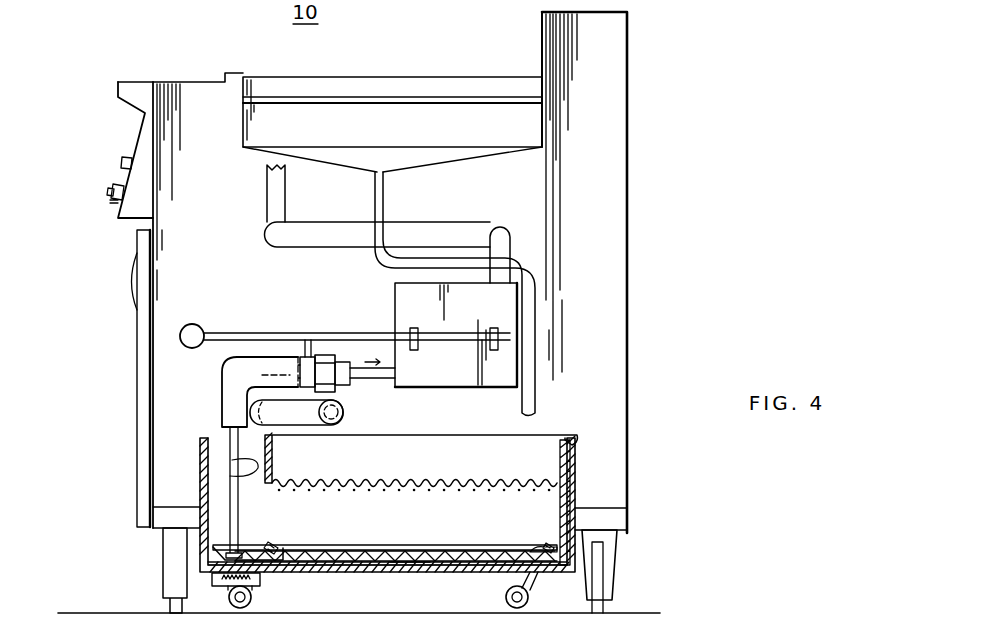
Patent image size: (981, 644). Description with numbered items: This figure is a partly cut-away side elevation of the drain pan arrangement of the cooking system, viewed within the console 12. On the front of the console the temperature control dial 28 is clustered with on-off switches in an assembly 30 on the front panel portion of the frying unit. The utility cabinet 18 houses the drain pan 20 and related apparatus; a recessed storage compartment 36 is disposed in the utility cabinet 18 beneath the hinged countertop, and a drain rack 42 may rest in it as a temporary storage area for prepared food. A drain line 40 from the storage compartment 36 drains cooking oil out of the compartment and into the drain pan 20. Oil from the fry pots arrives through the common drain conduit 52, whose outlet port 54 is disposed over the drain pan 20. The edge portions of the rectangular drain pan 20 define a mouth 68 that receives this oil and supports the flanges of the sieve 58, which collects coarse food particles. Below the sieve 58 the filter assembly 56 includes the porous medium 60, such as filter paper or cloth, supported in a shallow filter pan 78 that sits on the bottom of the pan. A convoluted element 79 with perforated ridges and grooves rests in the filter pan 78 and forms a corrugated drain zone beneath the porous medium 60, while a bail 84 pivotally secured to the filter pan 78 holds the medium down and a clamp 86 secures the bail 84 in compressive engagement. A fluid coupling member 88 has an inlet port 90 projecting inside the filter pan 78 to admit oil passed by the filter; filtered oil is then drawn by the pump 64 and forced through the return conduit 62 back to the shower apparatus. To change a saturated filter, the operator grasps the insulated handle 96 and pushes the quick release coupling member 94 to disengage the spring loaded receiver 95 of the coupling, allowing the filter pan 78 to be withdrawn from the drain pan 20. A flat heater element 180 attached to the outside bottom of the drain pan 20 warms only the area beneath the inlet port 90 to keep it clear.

The console 12 is at (627, 52).
The utility cabinet 18 is at (411, 75).
The drain pan 20 is at (200, 470).
The temperature control dial 28 is at (108, 197).
The assembly 30 is at (121, 160).
The recessed storage compartment 36 is at (541, 134).
The drain line 40 is at (385, 205).
The drain rack 42 is at (285, 93).
The common drain conduit 52 is at (303, 420).
The outlet port 54 is at (340, 412).
The filter assembly 56 is at (426, 520).
The sieve 58 is at (445, 480).
The porous medium 60 is at (380, 546).
The return conduit 62 is at (265, 200).
The pump 64 is at (505, 355).
The mouth 68 is at (245, 470).
The filter pan 78 is at (341, 562).
The convoluted element 79 is at (405, 565).
The bail 84 is at (271, 544).
The clamp 86 is at (553, 545).
The fluid coupling member 88 is at (305, 355).
The inlet port 90 is at (232, 525).
The quick release coupling member 94 is at (194, 330).
The spring loaded receiver 95 is at (324, 358).
The insulated handle 96 is at (240, 360).
The heater element 180 is at (212, 582).